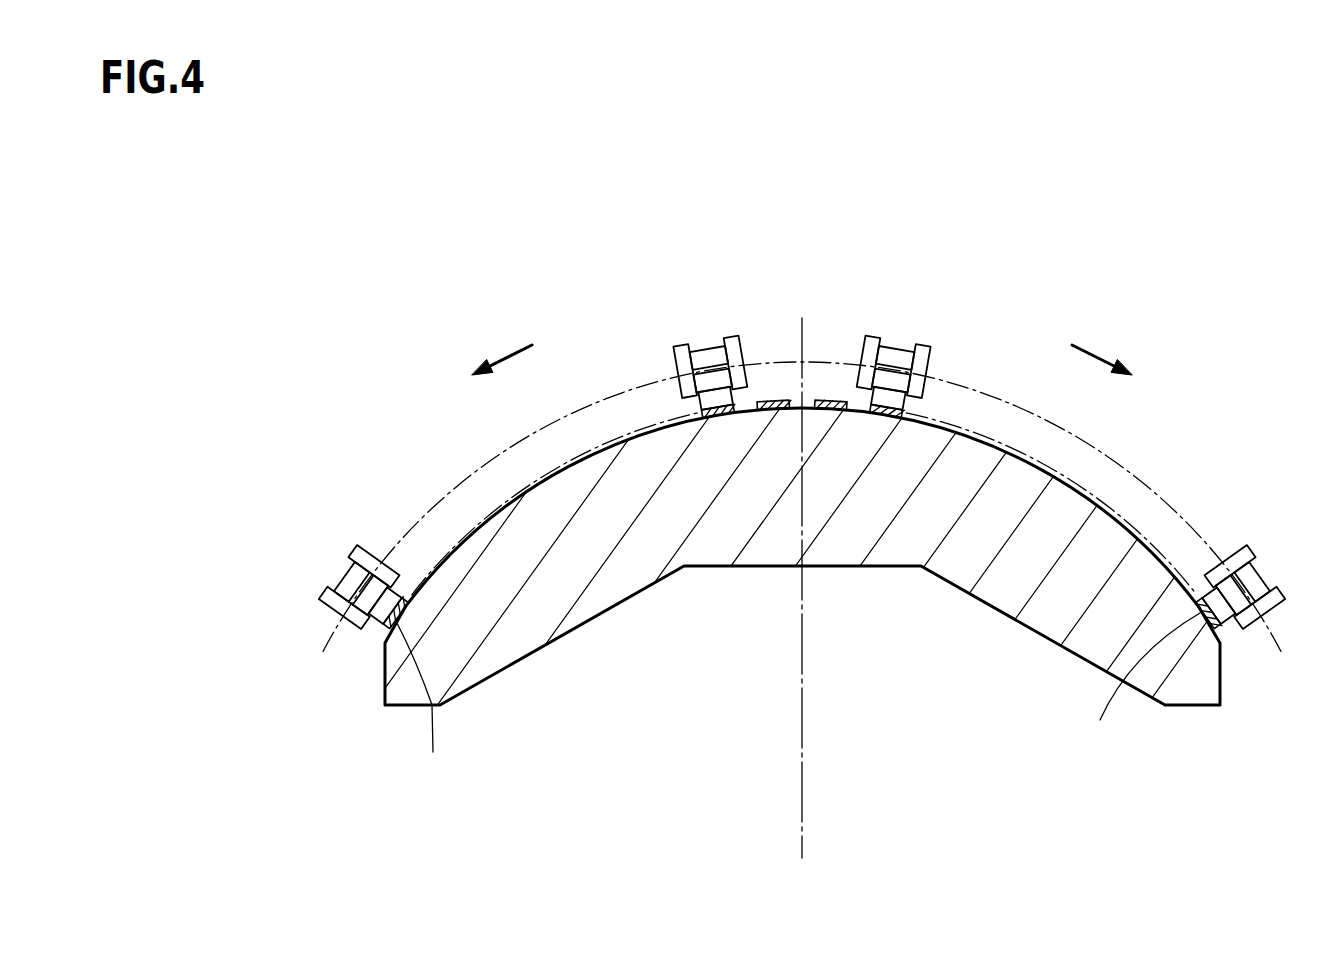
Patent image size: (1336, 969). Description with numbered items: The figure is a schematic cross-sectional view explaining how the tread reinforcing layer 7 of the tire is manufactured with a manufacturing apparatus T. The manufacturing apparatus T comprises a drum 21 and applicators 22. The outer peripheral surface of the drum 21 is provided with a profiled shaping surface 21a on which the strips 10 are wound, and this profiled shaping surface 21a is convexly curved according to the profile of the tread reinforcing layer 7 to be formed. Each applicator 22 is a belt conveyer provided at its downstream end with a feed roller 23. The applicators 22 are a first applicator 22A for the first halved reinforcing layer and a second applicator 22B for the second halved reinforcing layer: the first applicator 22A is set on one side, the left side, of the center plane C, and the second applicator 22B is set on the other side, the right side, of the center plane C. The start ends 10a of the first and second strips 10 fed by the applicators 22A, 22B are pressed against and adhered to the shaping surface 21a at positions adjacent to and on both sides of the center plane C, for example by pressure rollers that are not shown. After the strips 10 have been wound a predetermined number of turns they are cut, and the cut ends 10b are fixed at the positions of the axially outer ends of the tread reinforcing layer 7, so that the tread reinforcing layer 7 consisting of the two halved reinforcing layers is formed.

The strip 10 is at (852, 539).
The start end of strip 10a is at (827, 402).
The cut end of strip 10b is at (798, 698).
The drum 21 is at (1053, 623).
The profiled shaping surface 21a is at (987, 445).
The applicator 22 is at (802, 416).
The feed roller 23 is at (802, 409).
The first applicator 22A is at (683, 353).
The second applicator 22B is at (917, 343).
The tread reinforcing layer 7 is at (1067, 477).
The manufacturing apparatus T is at (1213, 343).
The center plane C is at (802, 564).